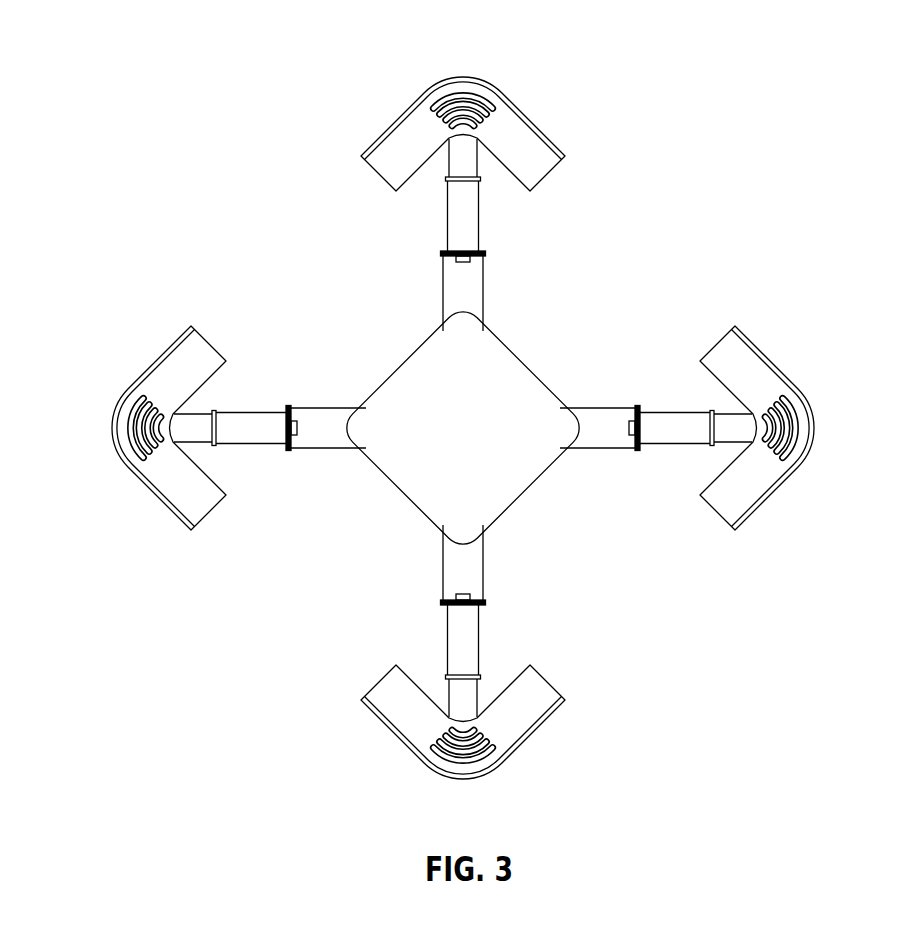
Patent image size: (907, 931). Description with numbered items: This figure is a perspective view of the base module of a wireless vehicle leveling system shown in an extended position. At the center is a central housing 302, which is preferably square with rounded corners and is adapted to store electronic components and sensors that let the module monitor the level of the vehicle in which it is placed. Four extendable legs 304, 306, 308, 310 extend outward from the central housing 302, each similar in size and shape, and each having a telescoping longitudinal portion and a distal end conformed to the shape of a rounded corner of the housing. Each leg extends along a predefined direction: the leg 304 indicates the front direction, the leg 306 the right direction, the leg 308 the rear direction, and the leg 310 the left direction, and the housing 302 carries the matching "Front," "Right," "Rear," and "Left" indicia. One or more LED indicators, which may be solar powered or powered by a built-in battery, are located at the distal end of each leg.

The central housing 302 is at (485, 480).
The extendable leg (front direction) 304 is at (421, 270).
The extendable leg (right direction) 306 is at (676, 384).
The extendable leg (rear direction) 308 is at (421, 643).
The extendable leg (left direction) 310 is at (249, 383).